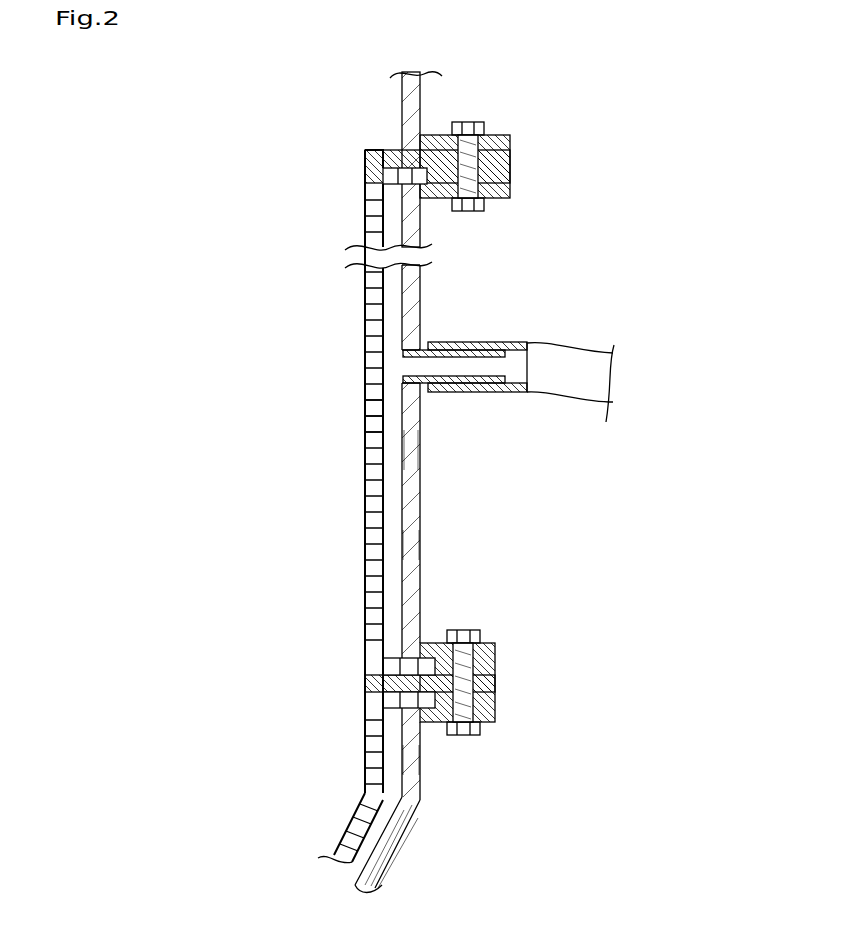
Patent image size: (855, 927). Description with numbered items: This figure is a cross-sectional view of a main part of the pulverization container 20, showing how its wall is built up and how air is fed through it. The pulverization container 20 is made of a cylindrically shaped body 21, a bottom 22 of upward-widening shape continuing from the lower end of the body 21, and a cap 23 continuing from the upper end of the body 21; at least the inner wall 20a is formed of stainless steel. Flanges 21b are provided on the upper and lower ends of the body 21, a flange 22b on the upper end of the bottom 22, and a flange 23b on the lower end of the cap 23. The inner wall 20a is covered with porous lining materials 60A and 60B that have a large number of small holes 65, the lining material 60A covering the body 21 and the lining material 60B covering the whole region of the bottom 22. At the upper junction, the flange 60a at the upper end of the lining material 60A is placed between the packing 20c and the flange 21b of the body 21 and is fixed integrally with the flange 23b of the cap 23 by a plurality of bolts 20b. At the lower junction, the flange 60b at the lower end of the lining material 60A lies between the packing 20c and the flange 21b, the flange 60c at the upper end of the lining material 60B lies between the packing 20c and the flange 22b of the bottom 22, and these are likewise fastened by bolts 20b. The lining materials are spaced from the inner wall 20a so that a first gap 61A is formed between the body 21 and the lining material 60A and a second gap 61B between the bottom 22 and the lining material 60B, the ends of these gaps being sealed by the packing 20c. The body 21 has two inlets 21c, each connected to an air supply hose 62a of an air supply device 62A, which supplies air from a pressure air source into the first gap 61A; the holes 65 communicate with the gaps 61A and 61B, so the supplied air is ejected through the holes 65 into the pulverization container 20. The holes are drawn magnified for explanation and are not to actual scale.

The pulverization container 20 is at (504, 482).
The cap 23 is at (422, 90).
The body 21 is at (423, 500).
The bottom 22 is at (421, 786).
The flange 23b is at (511, 136).
The flange 22b is at (496, 724).
The packing 20c is at (512, 165).
The flange 21b is at (508, 205).
The bolt 20b is at (480, 210).
The inner wall 20a is at (423, 546).
The inlet 21c is at (455, 360).
The air supply hose 62a is at (598, 347).
The air supply device 62A is at (545, 361).
The first gap 61A is at (410, 445).
The second gap 61B is at (386, 836).
The lining material 60A is at (365, 352).
The flange 60a is at (378, 148).
The hole 65 is at (364, 424).
The flange 60b is at (365, 666).
The flange 60c is at (365, 702).
The lining material 60B is at (356, 842).